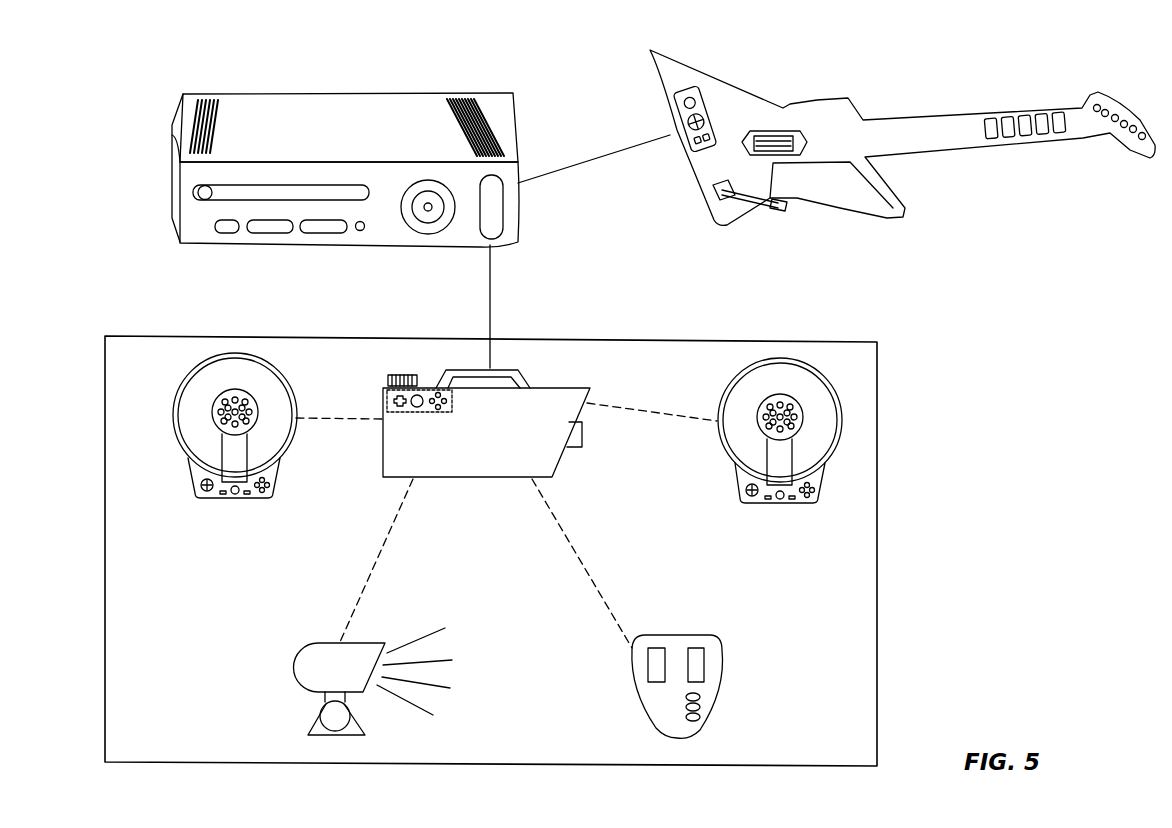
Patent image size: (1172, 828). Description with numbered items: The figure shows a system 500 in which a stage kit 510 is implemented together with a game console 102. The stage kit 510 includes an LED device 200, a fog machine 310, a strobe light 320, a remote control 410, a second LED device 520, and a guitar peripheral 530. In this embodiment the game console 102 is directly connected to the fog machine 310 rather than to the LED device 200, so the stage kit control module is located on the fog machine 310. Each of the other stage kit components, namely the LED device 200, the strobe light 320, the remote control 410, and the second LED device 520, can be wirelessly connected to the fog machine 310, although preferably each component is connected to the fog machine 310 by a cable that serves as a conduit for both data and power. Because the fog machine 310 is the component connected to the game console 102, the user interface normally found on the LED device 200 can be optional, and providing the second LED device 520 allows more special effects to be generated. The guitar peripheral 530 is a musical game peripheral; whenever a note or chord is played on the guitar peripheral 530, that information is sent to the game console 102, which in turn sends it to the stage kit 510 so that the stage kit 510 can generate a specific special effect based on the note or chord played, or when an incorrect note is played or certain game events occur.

The system 500 is at (110, 70).
The game console 102 is at (277, 93).
The guitar peripheral 530 is at (650, 50).
The stage kit 510 is at (187, 336).
The LED device 200 is at (190, 378).
The second LED device 520 is at (736, 381).
The fog machine 310 is at (506, 478).
The strobe light 320 is at (322, 642).
The remote control 410 is at (678, 635).